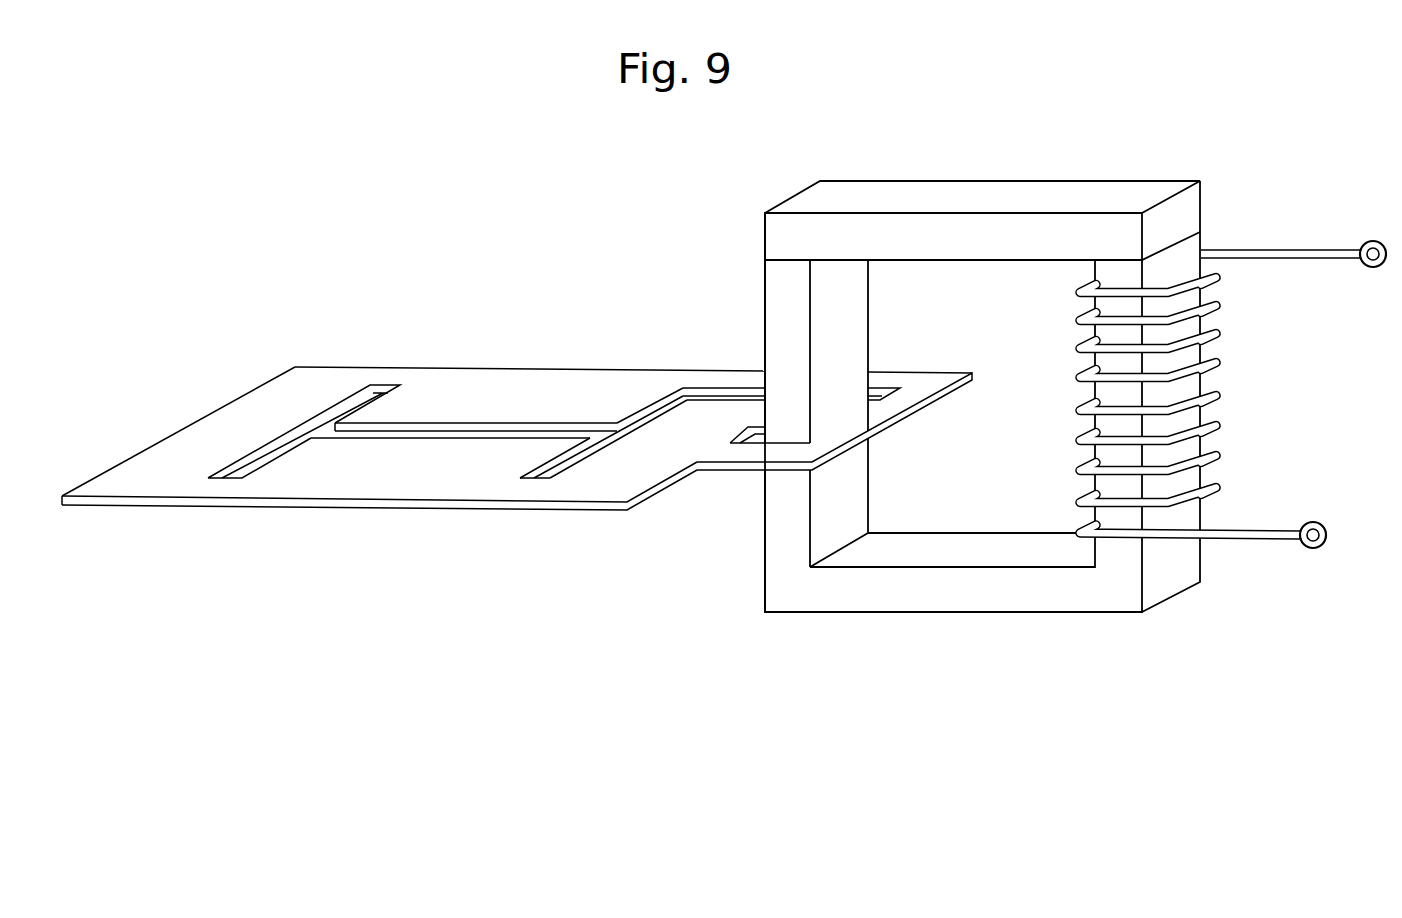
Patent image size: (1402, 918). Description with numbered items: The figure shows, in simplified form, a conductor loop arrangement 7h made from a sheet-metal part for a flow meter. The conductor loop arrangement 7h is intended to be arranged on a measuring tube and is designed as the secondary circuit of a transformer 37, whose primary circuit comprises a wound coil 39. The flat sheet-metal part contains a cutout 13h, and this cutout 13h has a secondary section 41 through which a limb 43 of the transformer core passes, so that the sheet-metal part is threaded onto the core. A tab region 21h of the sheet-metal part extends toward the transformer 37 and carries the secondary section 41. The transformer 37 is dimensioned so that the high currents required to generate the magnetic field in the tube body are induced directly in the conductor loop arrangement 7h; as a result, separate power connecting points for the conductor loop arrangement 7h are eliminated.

The conductor loop arrangement 7h is at (550, 390).
The cutout 13h is at (440, 437).
The tab portion of plate 21h is at (715, 395).
The transformer 37 is at (994, 181).
The wound coil 39 is at (1075, 408).
The secondary section 41 is at (756, 444).
The limb 43 is at (783, 502).